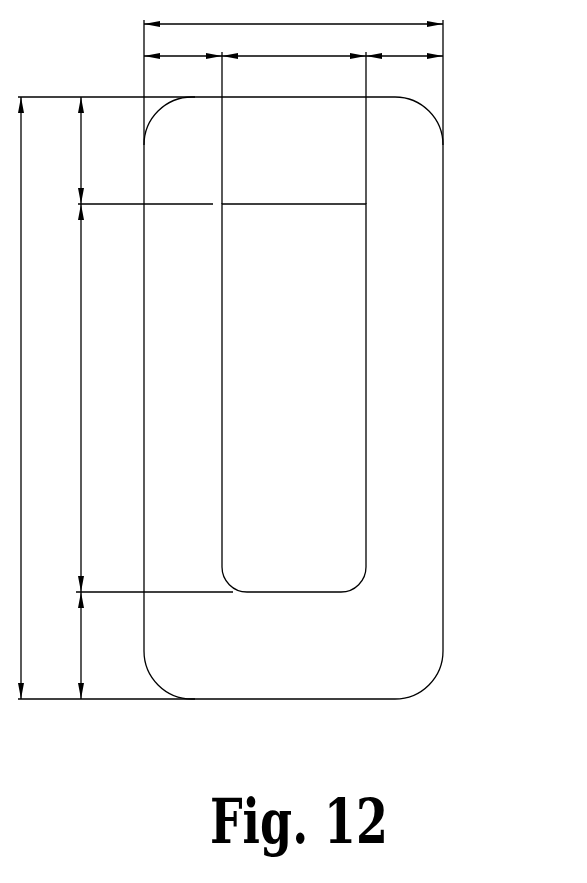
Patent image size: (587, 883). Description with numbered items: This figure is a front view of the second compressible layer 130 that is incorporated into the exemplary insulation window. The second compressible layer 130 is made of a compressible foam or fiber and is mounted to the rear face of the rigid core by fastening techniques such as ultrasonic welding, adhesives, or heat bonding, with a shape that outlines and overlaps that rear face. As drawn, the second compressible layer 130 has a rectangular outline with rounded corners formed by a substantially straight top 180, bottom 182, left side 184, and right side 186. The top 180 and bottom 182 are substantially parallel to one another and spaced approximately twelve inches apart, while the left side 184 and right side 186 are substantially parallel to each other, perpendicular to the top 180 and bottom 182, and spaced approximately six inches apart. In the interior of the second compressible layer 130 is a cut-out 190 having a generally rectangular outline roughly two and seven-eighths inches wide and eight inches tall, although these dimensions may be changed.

The second compressible layer 130 is at (316, 392).
The top 180 is at (197, 96).
The bottom 182 is at (283, 700).
The left side 184 is at (444, 463).
The right side 186 is at (143, 466).
The cut-out 190 is at (337, 353).